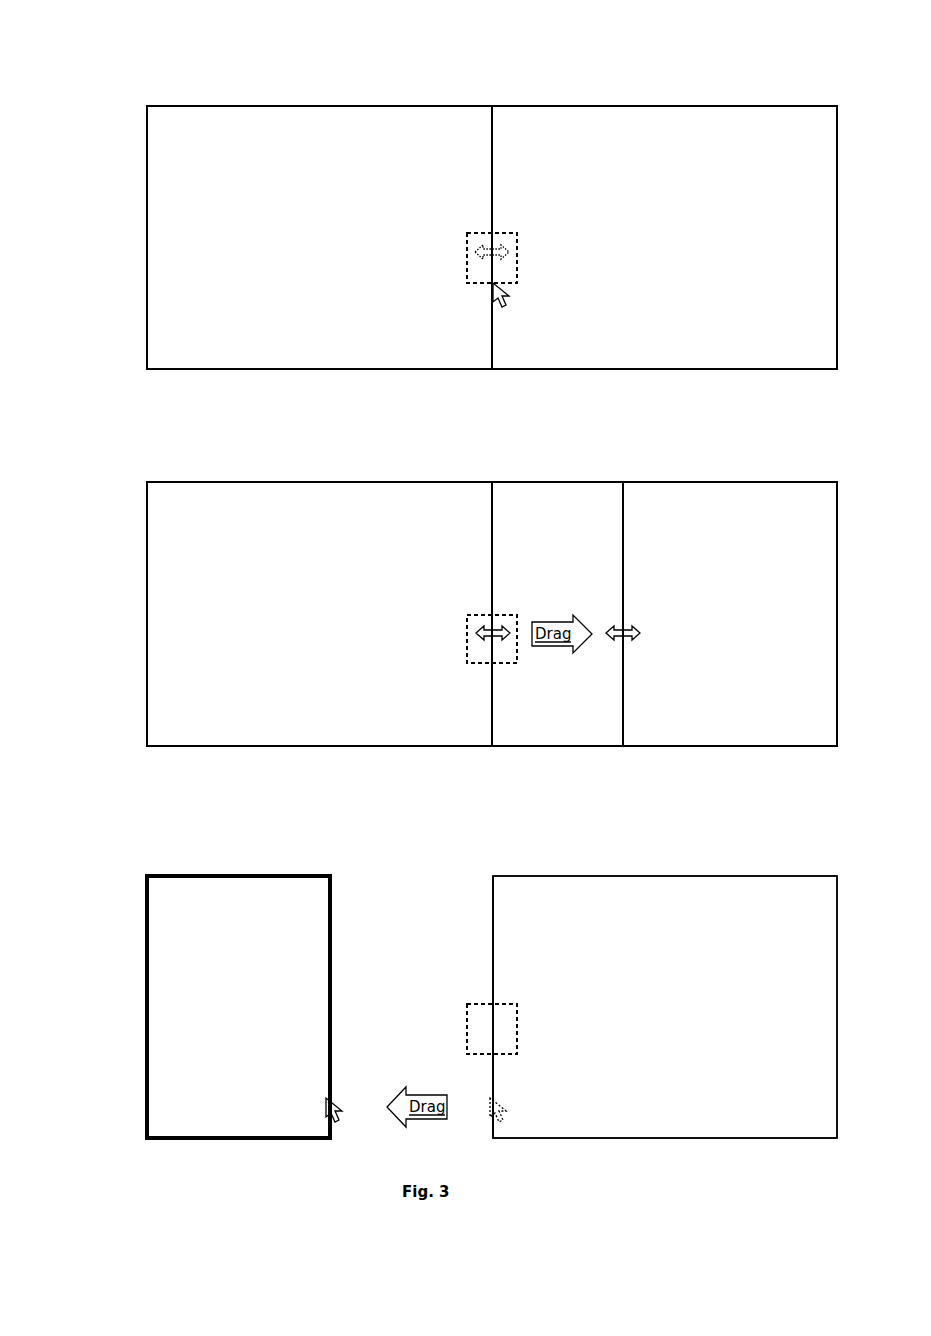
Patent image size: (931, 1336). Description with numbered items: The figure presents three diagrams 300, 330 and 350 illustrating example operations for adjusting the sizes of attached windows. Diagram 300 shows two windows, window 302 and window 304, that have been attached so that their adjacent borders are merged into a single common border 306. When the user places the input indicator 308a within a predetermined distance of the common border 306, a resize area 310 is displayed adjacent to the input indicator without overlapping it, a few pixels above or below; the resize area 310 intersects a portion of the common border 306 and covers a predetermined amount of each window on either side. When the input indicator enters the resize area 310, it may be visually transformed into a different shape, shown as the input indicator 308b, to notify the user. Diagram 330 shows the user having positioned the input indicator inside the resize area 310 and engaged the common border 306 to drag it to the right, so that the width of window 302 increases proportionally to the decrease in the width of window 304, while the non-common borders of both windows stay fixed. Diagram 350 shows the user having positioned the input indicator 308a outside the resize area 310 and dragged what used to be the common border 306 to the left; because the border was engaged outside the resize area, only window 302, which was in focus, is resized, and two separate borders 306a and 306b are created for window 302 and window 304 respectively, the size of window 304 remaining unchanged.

The diagram 300 is at (65, 22).
The window 302 is at (208, 106).
The window 304 is at (551, 106).
The common border 306 is at (493, 197).
The border 306a is at (331, 940).
The border 306b is at (494, 966).
The input indicator 308a is at (508, 299).
The input indicator 308b is at (505, 258).
The resize area 310 is at (466, 252).
The diagram 330 is at (80, 452).
The diagram 350 is at (80, 858).